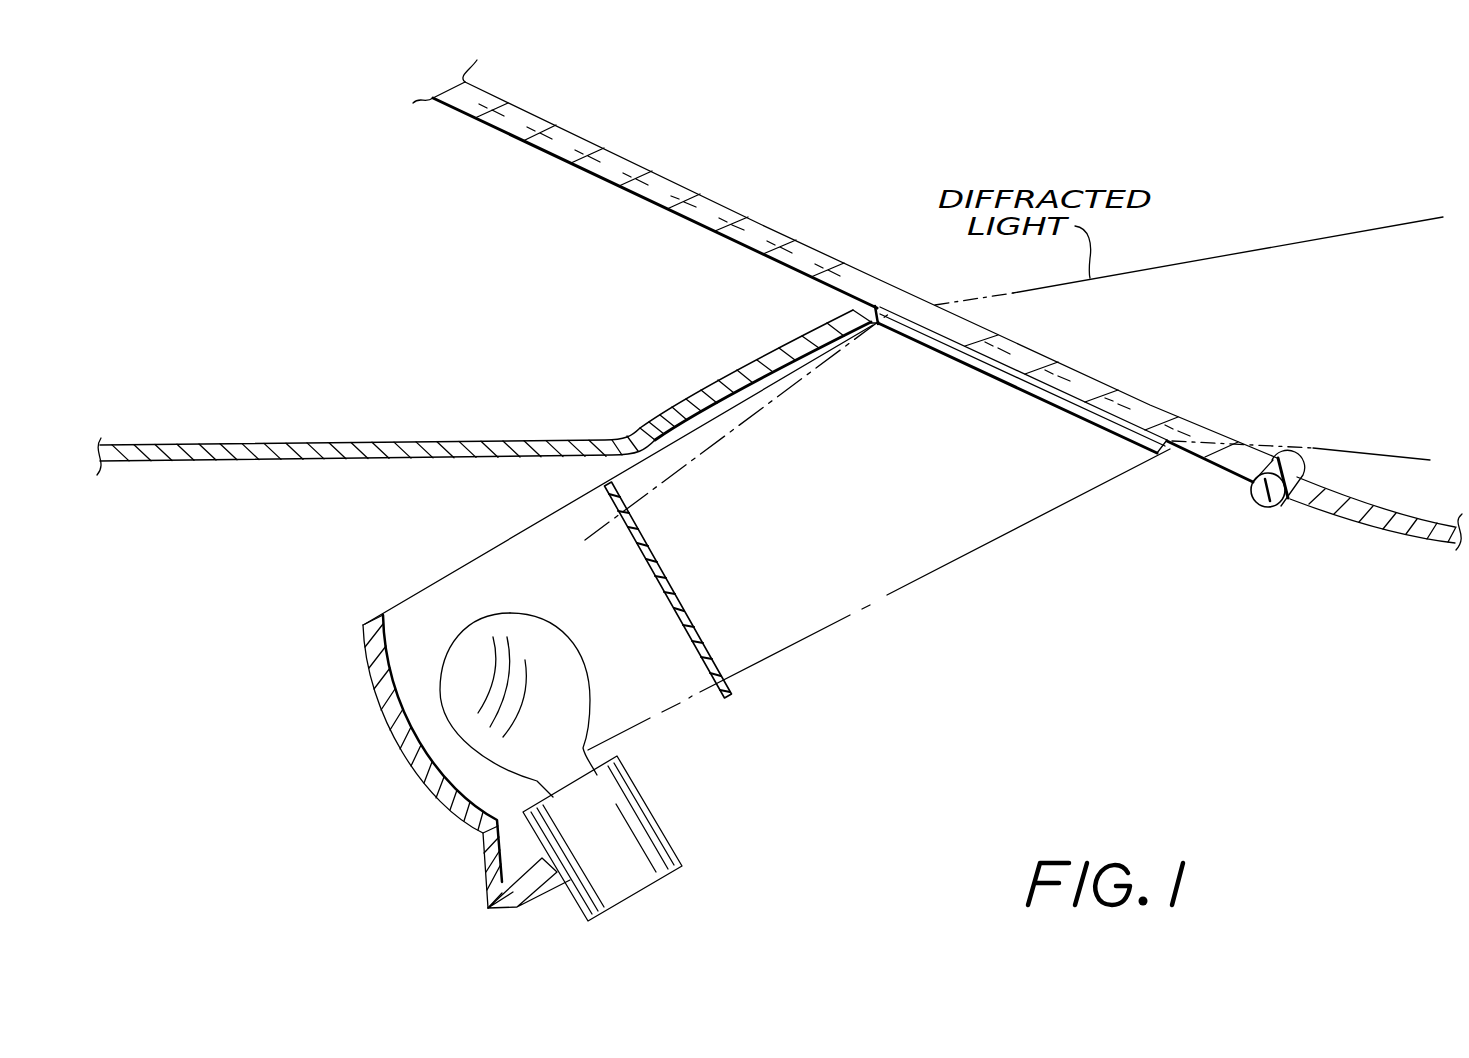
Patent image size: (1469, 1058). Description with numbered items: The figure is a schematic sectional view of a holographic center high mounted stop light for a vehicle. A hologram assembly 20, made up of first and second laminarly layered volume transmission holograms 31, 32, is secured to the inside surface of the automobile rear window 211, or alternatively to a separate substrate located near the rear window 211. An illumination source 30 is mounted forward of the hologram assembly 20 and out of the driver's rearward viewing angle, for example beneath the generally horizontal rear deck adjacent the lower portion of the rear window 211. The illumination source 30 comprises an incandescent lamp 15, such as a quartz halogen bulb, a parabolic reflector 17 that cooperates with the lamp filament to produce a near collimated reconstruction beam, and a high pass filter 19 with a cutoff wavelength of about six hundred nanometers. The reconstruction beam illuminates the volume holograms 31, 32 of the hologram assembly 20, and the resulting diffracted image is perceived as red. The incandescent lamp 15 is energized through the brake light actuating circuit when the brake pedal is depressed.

The rear window 211 is at (779, 232).
The hologram assembly 20 is at (1060, 420).
The second volume transmission hologram 32 is at (878, 307).
The first volume transmission hologram 31 is at (878, 328).
The illumination source 30 is at (700, 617).
The reflector 17 is at (438, 788).
The incandescent lamp 15 is at (549, 624).
The high pass filter 19 is at (692, 627).